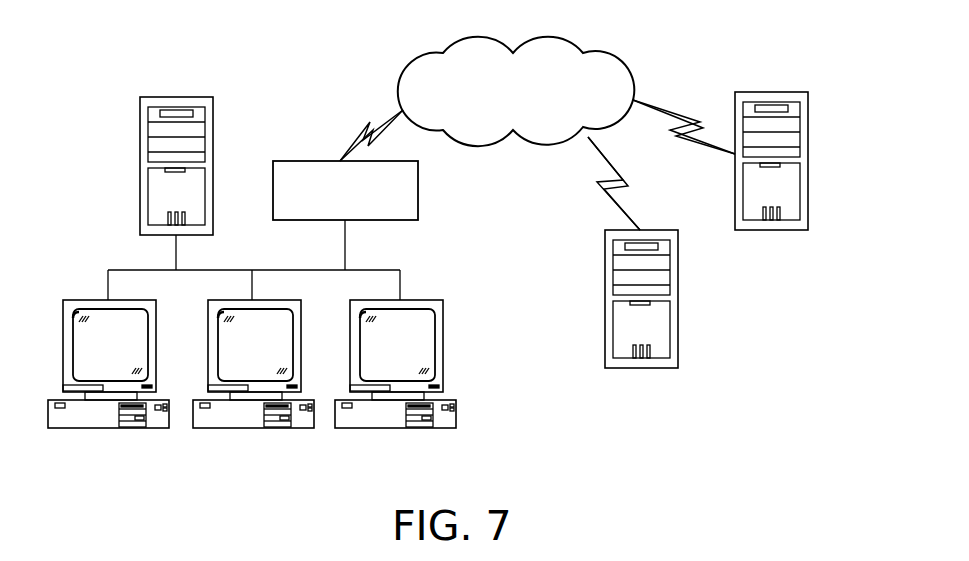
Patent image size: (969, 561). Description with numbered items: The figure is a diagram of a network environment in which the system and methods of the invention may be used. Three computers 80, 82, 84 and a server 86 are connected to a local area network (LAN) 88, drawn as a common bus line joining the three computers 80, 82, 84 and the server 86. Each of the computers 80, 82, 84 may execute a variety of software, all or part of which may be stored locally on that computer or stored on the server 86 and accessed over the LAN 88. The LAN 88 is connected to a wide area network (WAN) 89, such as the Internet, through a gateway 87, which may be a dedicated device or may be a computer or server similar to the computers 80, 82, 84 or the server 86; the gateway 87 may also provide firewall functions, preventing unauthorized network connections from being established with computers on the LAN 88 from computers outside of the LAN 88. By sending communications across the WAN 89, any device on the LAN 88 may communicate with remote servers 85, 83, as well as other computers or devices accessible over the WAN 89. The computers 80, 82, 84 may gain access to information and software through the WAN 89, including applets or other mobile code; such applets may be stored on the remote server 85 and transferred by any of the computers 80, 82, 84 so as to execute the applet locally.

The computer 80 is at (88, 408).
The computer 82 is at (218, 417).
The remote server 83 is at (808, 143).
The computer 84 is at (380, 418).
The remote server 85 is at (678, 292).
The server 86 is at (213, 150).
The gateway 87 is at (418, 188).
The local area network (LAN) 88 is at (400, 272).
The wide area network (WAN) 89 is at (401, 68).